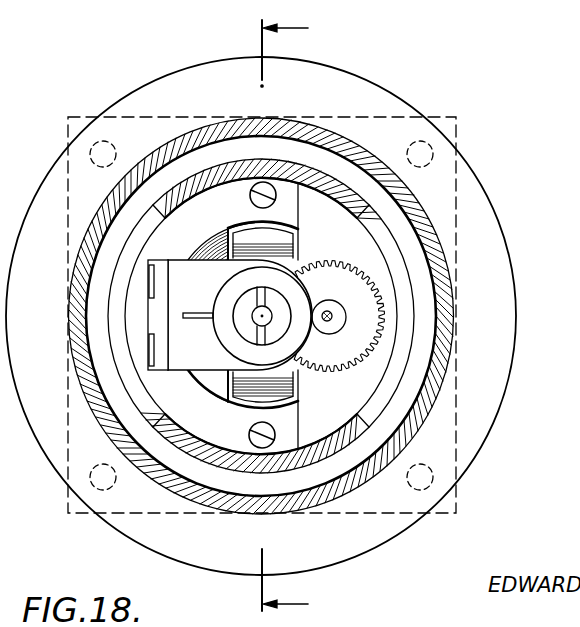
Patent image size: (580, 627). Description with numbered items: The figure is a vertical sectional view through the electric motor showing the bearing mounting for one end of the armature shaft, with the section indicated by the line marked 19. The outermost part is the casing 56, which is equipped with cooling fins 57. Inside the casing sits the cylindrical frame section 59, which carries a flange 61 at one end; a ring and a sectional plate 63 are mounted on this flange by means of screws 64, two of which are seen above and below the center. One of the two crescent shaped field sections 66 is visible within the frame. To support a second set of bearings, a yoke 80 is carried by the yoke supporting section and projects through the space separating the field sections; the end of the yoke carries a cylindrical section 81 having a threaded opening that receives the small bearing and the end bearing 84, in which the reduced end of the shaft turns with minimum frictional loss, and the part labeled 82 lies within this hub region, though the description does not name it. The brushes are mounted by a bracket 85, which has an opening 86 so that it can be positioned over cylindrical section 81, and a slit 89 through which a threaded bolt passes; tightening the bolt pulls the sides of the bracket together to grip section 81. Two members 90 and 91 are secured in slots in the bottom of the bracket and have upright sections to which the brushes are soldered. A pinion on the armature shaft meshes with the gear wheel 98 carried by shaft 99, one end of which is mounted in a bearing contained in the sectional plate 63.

The section line 19- 19 is at (300, 316).
The casing 56 is at (433, 245).
The cooling fins 57 is at (505, 306).
The cylindrical frame section 59 is at (338, 181).
The flange 61 is at (193, 429).
The sectional plate 63 is at (362, 233).
The screws 64 is at (249, 432).
The field section 66 is at (218, 397).
The yoke 80 is at (248, 237).
The cylindrical section 81 is at (220, 332).
The hub disc 82 is at (272, 300).
The end bearing 84 is at (265, 321).
The bracket 85 is at (240, 315).
The opening 86 is at (243, 277).
The slit 89 is at (192, 313).
The member 90 is at (153, 275).
The member 91 is at (152, 369).
The gear wheel 98 is at (362, 283).
The shaft 99 is at (331, 334).